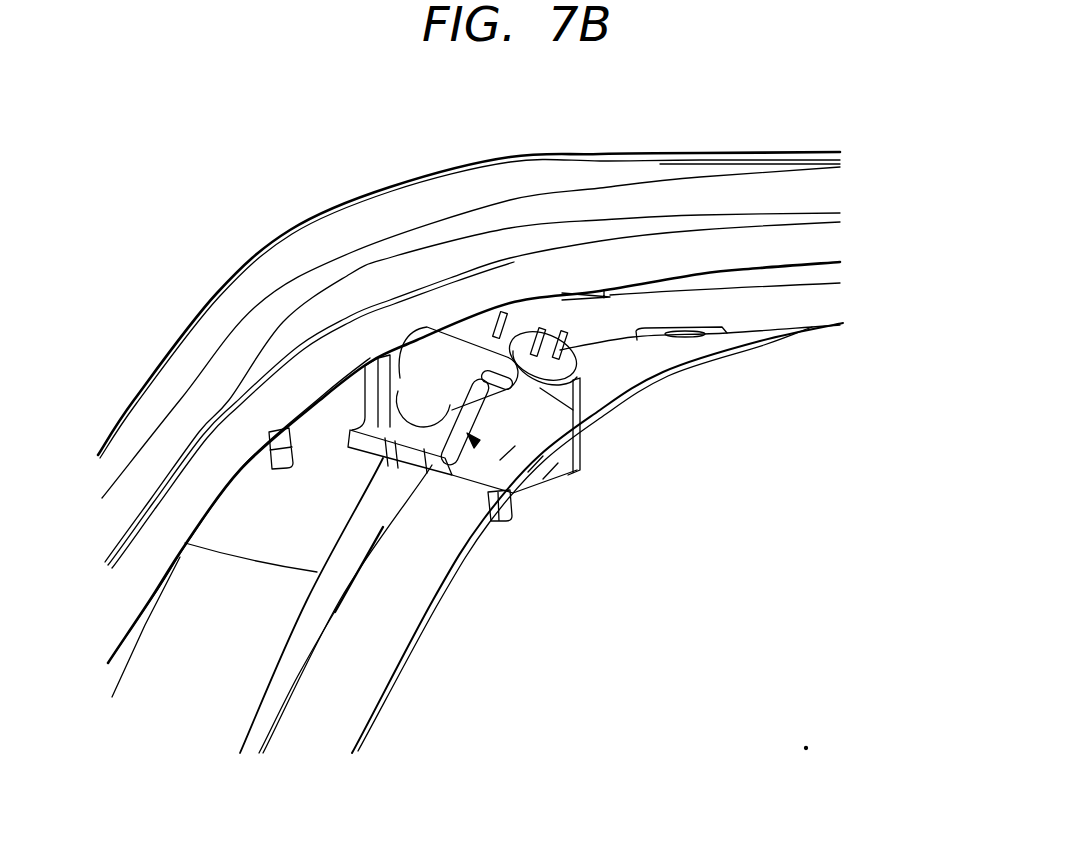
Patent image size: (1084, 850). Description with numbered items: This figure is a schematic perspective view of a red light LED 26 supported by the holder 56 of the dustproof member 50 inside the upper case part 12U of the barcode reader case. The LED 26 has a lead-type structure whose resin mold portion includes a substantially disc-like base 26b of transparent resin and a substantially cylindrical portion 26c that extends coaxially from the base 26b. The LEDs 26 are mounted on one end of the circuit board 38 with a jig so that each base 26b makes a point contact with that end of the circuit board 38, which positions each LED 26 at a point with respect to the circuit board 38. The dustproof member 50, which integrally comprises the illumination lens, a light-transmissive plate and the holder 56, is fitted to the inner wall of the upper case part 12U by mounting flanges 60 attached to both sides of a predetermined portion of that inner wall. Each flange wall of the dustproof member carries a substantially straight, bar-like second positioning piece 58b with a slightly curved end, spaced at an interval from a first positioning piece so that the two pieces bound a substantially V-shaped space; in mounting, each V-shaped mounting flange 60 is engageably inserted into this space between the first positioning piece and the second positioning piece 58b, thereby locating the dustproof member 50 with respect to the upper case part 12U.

The upper case part 12U is at (687, 157).
The LED 26 is at (574, 365).
The base 26b is at (546, 384).
The cylindrical portion 26c is at (453, 360).
The circuit board 38 is at (822, 323).
The dustproof member 50 is at (550, 497).
The holder 56 is at (487, 520).
The second positioning piece 58b is at (368, 386).
The mounting flange 60 is at (347, 407).